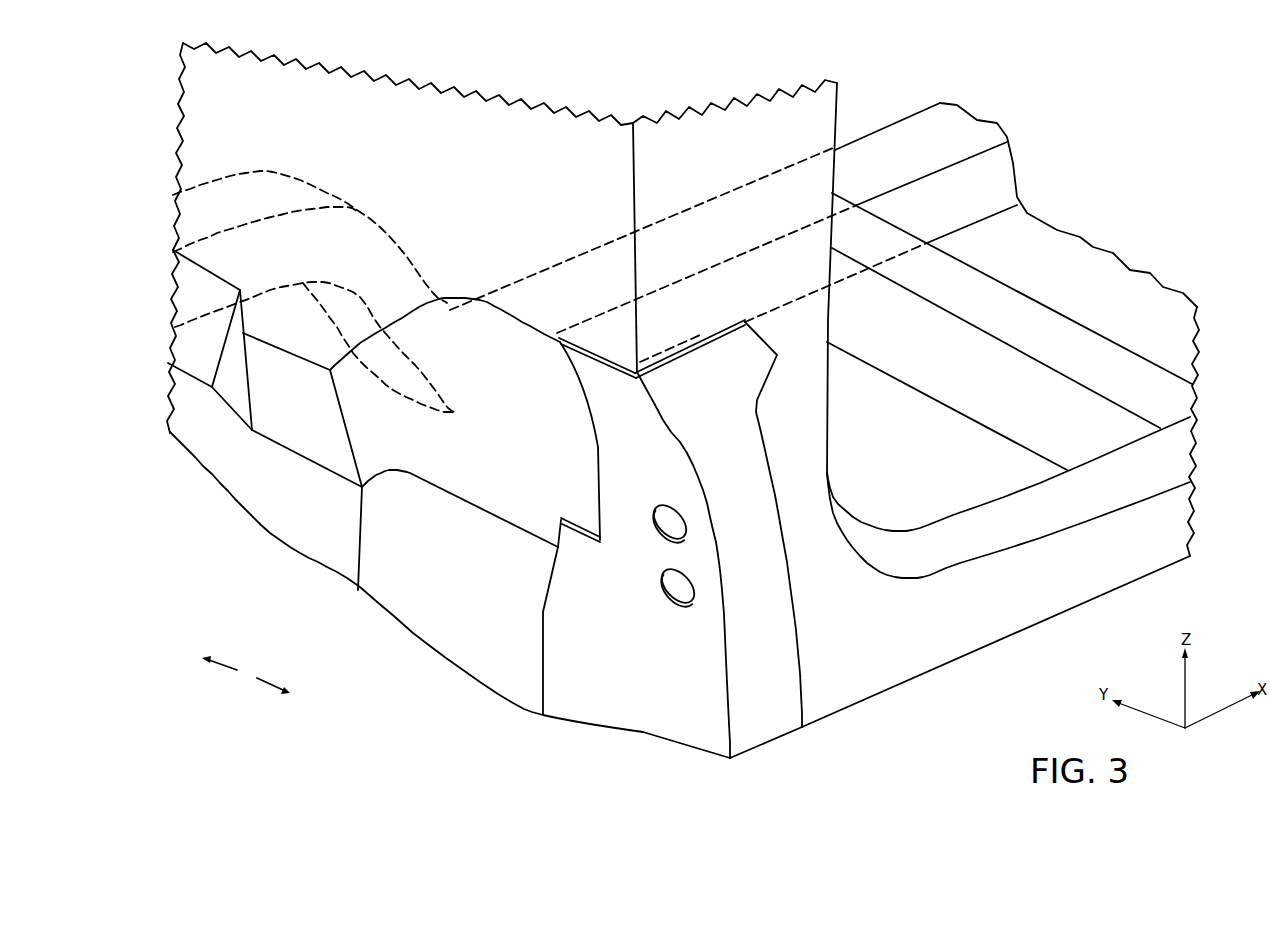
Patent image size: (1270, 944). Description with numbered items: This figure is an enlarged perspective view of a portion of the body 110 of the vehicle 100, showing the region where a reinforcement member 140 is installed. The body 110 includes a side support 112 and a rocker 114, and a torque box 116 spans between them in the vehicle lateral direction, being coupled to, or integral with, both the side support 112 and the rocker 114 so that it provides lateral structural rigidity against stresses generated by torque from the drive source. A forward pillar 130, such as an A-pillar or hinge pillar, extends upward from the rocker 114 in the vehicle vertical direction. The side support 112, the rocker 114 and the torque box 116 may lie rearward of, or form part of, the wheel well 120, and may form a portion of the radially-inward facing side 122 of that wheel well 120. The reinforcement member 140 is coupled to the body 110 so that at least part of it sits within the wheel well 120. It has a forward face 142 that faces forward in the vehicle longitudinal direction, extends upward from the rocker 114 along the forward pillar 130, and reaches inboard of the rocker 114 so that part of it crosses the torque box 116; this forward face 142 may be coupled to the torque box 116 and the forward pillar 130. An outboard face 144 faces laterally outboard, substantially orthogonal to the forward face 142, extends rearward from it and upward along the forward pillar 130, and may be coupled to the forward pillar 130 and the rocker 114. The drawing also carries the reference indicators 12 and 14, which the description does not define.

The aft direction 12 is at (268, 677).
The forward direction 14 is at (237, 670).
The vehicle 100 is at (683, 417).
The body 110 is at (402, 230).
The side support 112 is at (1013, 304).
The rocker 114 is at (996, 651).
The torque box 116 is at (406, 611).
The wheel well 120 is at (364, 499).
The radially-inward facing side 122 is at (479, 621).
The forward pillar 130 is at (688, 264).
The reinforcement member 140 is at (683, 563).
The forward face 142 is at (683, 722).
The outboard face 144 is at (763, 720).